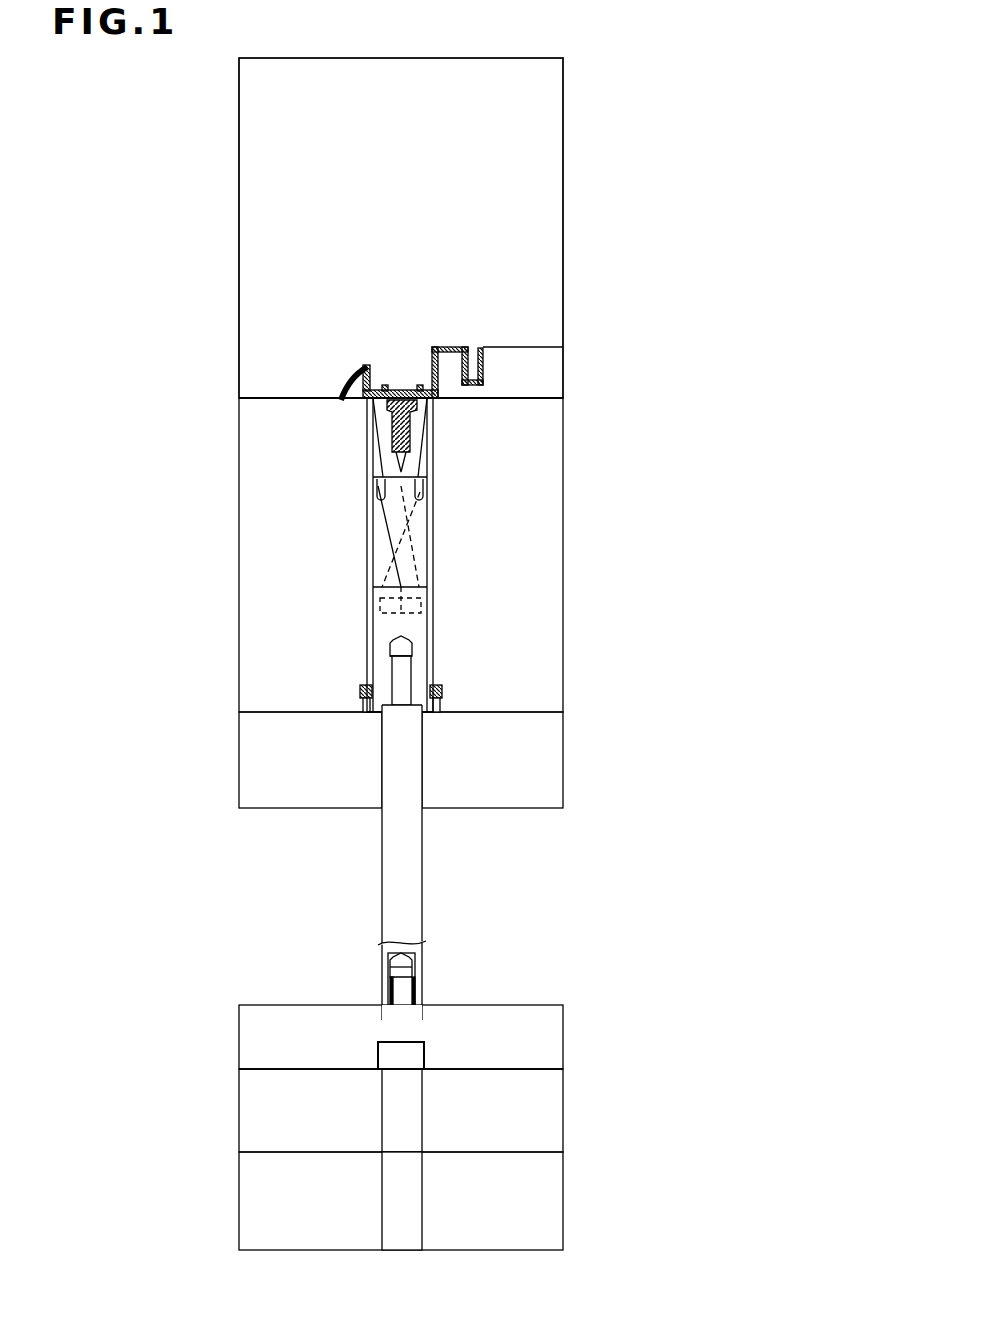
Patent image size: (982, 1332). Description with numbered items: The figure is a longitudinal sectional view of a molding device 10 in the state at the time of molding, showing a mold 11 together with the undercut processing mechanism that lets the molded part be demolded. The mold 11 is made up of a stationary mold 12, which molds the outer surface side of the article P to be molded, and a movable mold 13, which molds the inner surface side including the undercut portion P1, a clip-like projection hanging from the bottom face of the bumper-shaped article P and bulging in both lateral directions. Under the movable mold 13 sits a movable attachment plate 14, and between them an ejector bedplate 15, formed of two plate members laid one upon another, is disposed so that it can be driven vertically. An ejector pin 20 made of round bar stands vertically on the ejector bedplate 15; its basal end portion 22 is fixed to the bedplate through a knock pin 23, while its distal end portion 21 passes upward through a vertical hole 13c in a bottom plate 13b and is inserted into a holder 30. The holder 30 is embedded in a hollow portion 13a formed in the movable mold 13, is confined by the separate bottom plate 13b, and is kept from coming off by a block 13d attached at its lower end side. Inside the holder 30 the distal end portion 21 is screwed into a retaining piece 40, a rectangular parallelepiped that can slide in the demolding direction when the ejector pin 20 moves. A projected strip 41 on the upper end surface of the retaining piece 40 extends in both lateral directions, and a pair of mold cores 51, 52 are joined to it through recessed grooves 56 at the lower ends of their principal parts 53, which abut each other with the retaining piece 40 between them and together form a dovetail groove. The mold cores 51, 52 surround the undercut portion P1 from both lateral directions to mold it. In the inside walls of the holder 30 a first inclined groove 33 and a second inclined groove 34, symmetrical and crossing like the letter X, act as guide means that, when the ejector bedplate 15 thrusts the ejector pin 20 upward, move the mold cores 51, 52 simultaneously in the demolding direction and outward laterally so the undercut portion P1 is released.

The molding device 10 is at (570, 49).
The mold 11 is at (236, 121).
The stationary mold 12 is at (243, 227).
The movable mold 13 is at (238, 432).
The hollow portion 13a is at (368, 622).
The bottom plate 13b is at (242, 762).
The vertical hole 13c is at (383, 791).
The block 13d is at (360, 691).
The movable attachment plate 14 is at (240, 1200).
The ejector bedplate 15 is at (240, 1069).
The ejector pin 20 is at (378, 897).
The distal end portion 21 is at (390, 666).
The basal end portion 22 is at (388, 974).
The knock pin 23 is at (408, 1030).
The holder 30 is at (363, 545).
The first inclined groove 33 is at (430, 488).
The second inclined groove 34 is at (381, 491).
The retaining piece 40 is at (437, 627).
The projected strip 41 is at (430, 568).
The mold core 51 is at (430, 445).
The mold core 52 is at (385, 439).
The principal part 53 is at (386, 524).
The recessed groove 56 is at (380, 600).
The article to be molded P is at (437, 347).
The undercut portion P1 is at (430, 398).